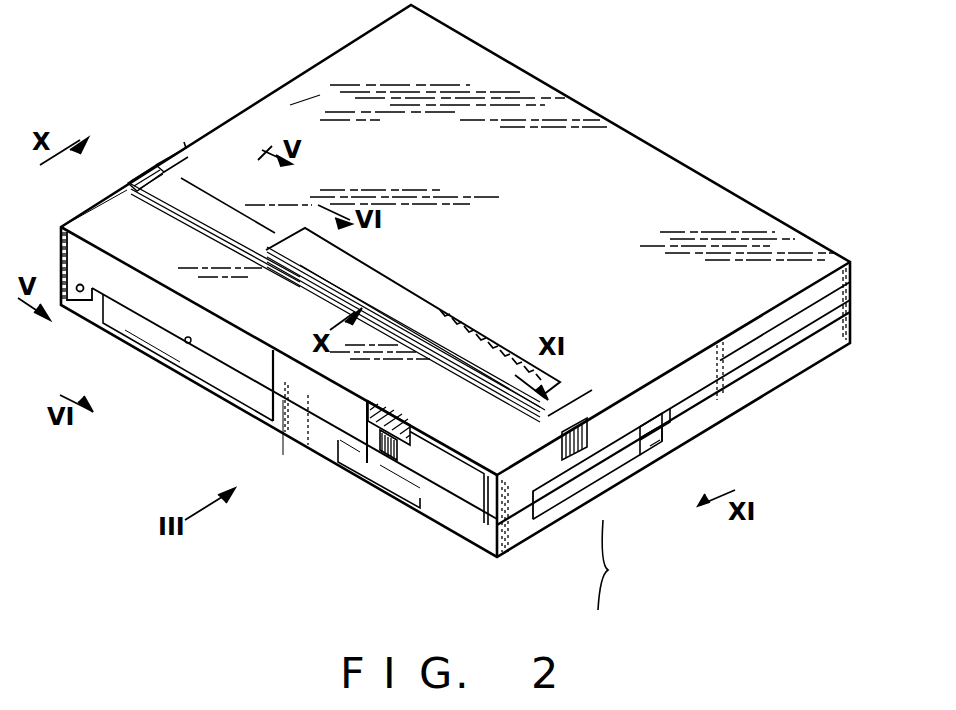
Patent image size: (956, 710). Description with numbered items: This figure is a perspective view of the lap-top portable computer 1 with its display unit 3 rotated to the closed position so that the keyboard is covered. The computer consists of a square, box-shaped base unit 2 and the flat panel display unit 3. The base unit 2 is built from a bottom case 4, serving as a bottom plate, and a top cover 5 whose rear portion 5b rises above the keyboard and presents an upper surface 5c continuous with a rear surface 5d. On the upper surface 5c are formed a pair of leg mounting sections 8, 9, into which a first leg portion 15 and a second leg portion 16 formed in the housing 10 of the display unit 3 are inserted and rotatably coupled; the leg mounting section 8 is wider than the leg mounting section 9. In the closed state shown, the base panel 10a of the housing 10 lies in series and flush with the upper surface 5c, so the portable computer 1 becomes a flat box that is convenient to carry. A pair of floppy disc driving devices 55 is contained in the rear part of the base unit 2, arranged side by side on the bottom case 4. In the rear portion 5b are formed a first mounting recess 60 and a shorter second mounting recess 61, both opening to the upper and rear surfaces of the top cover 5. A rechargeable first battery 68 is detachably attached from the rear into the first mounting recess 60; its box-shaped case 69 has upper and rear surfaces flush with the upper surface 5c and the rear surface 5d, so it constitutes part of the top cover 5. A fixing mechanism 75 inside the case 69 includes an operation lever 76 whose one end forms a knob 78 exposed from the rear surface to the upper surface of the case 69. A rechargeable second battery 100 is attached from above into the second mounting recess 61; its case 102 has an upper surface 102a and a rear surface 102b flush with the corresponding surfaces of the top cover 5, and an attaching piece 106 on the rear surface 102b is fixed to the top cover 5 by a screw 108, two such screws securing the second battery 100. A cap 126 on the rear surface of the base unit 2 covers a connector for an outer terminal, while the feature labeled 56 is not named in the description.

The portable computer 1 is at (735, 414).
The base unit 2 is at (612, 565).
The display unit 3 is at (657, 185).
The bottom case 4 is at (520, 520).
The top cover 5 is at (540, 475).
The rear portion 5b is at (603, 432).
The upper surface 5c is at (400, 300).
The rear surface 5d is at (313, 455).
The leg mounting section 8 is at (162, 185).
The leg mounting section 9 is at (566, 415).
The housing 10 is at (513, 96).
The base panel 10a is at (297, 100).
The first leg portion 15 is at (212, 208).
The second leg portion 16 is at (545, 424).
The floppy disc driving device 55 is at (605, 455).
The window edge 56 is at (655, 445).
The first mounting recess 60 is at (488, 530).
The second mounting recess 61 is at (190, 360).
The first battery 68 is at (445, 482).
The case 69 is at (286, 412).
The fixing mechanism 75 is at (395, 482).
The operation lever 76 is at (377, 402).
The knob 78 is at (398, 412).
The second battery 100 is at (125, 213).
The case 102 is at (250, 392).
The upper surface 102a is at (232, 275).
The rear surface 102b is at (145, 342).
The attaching piece 106 is at (100, 305).
The screw 108 is at (85, 287).
The cap 126 is at (222, 380).